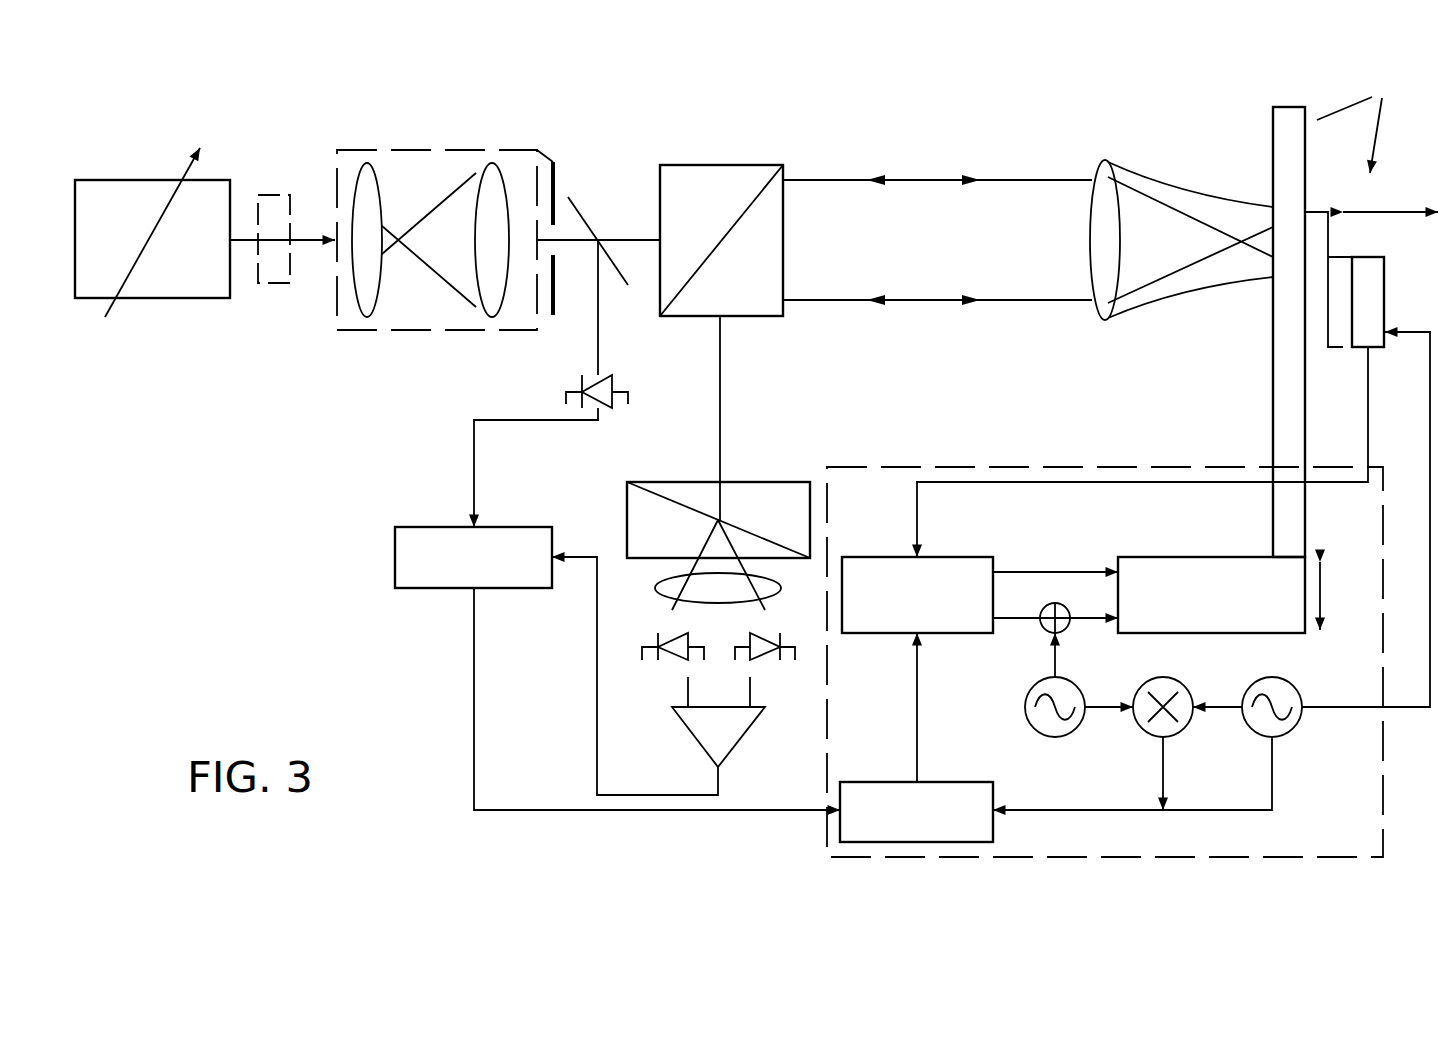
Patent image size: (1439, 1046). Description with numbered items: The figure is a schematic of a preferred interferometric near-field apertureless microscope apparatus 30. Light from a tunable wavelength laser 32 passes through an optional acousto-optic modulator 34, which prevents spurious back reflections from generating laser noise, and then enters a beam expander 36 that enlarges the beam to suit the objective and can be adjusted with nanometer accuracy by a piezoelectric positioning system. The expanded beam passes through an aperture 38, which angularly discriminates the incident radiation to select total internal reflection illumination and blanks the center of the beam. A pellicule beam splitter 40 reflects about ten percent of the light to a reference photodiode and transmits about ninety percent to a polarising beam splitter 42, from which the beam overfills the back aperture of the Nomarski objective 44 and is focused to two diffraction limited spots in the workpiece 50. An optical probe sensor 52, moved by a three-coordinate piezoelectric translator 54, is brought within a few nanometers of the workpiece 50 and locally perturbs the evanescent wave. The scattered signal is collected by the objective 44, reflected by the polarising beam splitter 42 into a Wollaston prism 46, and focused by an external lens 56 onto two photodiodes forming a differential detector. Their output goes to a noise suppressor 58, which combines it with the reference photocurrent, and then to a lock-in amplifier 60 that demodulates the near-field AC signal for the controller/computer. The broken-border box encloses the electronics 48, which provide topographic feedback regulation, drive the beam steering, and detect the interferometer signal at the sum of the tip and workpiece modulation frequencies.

The apparatus 30 is at (383, 660).
The laser 32 is at (140, 298).
The acousto-optic modulator 34 is at (277, 195).
The beam expander 36 is at (443, 148).
The aperture 38 is at (552, 160).
The pellicule beam splitter 40 is at (598, 180).
The polarising beam splitter 42 is at (687, 165).
The transmission/collection optics 44 is at (1106, 160).
The Wollaston prism 46 is at (627, 510).
The electronics 48 is at (1105, 631).
The workpiece 50 is at (1273, 148).
The optical probe sensor 52 is at (1371, 264).
The three-coordinate piezoelectric translator 54 is at (1385, 313).
The external lens 56 is at (670, 582).
The noise suppressor 58 is at (432, 527).
The lock-in amplifier 60 is at (890, 782).